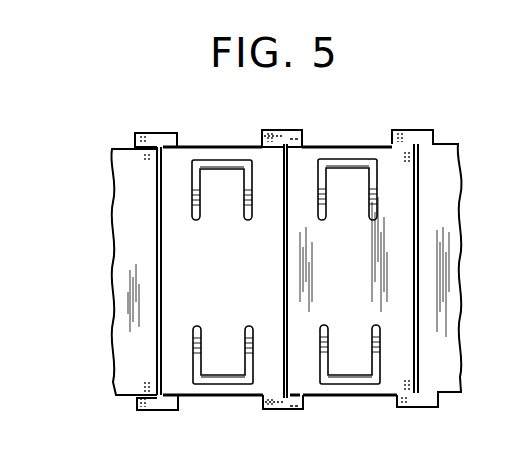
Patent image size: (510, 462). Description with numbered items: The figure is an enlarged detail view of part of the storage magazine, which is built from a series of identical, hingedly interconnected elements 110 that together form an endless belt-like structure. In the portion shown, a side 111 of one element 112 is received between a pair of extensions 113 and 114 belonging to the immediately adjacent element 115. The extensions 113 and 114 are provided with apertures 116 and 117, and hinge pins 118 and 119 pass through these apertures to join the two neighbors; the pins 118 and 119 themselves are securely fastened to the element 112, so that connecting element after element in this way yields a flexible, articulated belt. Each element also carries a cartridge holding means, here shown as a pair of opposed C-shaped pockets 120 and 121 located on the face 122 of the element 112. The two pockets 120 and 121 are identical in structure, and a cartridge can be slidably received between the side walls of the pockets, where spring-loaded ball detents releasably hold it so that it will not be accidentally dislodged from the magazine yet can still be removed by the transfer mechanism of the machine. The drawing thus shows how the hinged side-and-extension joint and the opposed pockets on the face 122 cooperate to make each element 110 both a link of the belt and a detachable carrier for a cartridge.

The hingedly interconnected elements 110 is at (162, 118).
The side 111 is at (274, 172).
The element 112 is at (250, 378).
The extension 113 is at (281, 122).
The extension 114 is at (292, 401).
The immediately adjacent element 115 is at (375, 149).
The aperture 116 is at (259, 122).
The aperture 117 is at (275, 401).
The hinge pin 118 is at (294, 125).
The hinge pin 119 is at (264, 401).
The C-shaped pocket 120 is at (200, 151).
The C-shaped pocket 121 is at (207, 375).
The face 122 is at (164, 237).